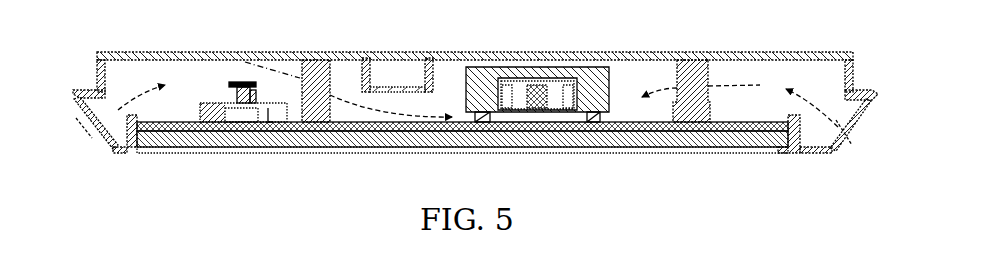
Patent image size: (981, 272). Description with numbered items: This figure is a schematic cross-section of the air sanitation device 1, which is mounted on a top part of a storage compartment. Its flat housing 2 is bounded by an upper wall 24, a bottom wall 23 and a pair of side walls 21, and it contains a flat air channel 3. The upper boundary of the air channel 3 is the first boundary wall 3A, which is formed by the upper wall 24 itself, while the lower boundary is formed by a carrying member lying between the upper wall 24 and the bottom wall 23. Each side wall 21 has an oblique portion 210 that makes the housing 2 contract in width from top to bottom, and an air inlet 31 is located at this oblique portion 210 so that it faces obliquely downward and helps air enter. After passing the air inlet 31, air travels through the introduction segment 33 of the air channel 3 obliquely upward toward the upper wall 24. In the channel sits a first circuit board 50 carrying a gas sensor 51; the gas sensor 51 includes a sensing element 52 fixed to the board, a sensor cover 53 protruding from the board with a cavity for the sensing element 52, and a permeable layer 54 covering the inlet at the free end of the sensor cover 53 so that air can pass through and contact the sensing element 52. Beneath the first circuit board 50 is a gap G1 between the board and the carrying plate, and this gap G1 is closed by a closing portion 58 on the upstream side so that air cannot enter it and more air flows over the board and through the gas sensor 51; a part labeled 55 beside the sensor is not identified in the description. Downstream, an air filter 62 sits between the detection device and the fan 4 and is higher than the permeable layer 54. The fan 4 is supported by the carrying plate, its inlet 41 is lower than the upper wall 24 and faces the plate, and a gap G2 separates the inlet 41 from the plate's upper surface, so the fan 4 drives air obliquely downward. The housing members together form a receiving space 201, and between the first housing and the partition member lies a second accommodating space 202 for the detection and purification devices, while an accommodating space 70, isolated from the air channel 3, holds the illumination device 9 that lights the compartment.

The air sanitation device 1 is at (588, 37).
The housing 2 is at (777, 54).
The air channel 3 is at (749, 97).
The first boundary wall 3A is at (296, 55).
The fan 4 is at (609, 78).
The illumination device 9 is at (262, 148).
The side wall 21 is at (72, 94).
The bottom wall 23 is at (803, 152).
The upper wall 24 is at (477, 54).
The air inlet 31 is at (100, 132).
The introduction segment 33 is at (365, 130).
The inlet of the fan 41 is at (558, 118).
The first circuit board 50 is at (207, 99).
The gas sensor 51 is at (231, 91).
The sensing element 52 is at (238, 104).
The sensor cover 53 is at (256, 96).
The permeable layer 54 is at (239, 82).
The valve seat 55 is at (229, 103).
The closing portion 58 is at (199, 117).
The air filter 62 is at (364, 60).
The accommodating space 70 is at (232, 147).
The receiving space 201 is at (446, 95).
The second accommodating space 202 is at (637, 111).
The oblique portion 210 is at (75, 120).
The gap G1 is at (273, 116).
The gap G2 is at (523, 118).